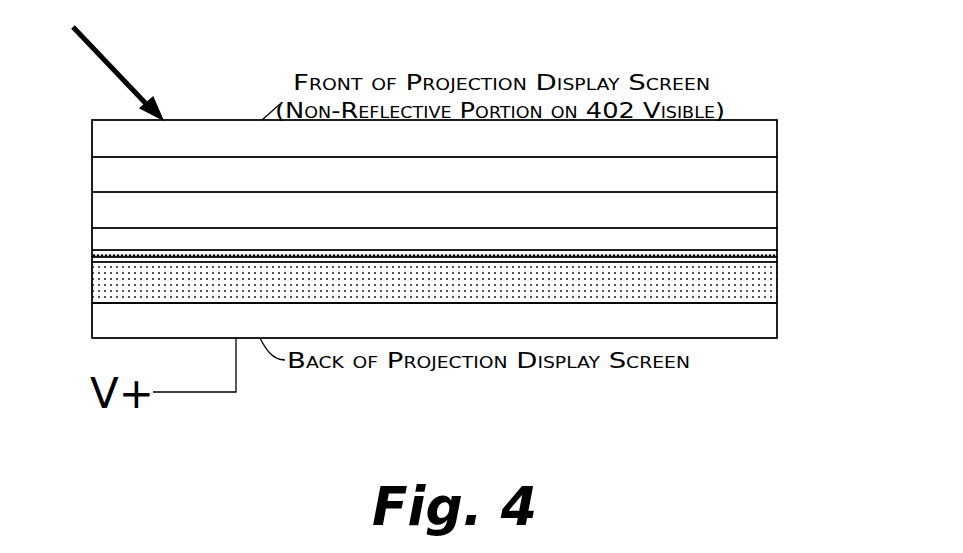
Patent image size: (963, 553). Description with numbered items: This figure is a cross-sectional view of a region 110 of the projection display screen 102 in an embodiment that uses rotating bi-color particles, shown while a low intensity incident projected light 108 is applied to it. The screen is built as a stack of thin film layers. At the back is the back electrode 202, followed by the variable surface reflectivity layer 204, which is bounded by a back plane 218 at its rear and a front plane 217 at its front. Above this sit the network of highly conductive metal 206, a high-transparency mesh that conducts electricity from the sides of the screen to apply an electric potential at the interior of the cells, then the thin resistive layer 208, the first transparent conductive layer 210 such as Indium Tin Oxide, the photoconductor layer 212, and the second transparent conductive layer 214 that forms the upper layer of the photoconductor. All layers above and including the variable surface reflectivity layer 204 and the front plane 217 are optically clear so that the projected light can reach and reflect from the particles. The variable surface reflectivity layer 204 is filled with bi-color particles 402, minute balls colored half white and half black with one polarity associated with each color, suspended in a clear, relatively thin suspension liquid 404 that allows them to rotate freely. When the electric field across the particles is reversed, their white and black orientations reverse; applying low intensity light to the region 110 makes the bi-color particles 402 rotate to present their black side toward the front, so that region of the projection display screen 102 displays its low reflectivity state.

The projection display screen 102 is at (775, 120).
The incident projected light 108 is at (112, 66).
The region 110 is at (320, 422).
The back electrode 202 is at (382, 350).
The variable surface reflectivity layer 204 is at (97, 293).
The network of highly conductive metal 206 is at (100, 250).
The thin resistive layer 208 is at (768, 242).
The first transparent conductive layer 210 is at (434, 210).
The photoconductor layer 212 is at (434, 174).
The second transparent conductive layer 214 is at (434, 138).
The front plane 217 is at (770, 263).
The back plane 218 is at (765, 320).
The bi-color particles 402 is at (170, 290).
The suspension liquid 404 is at (770, 295).